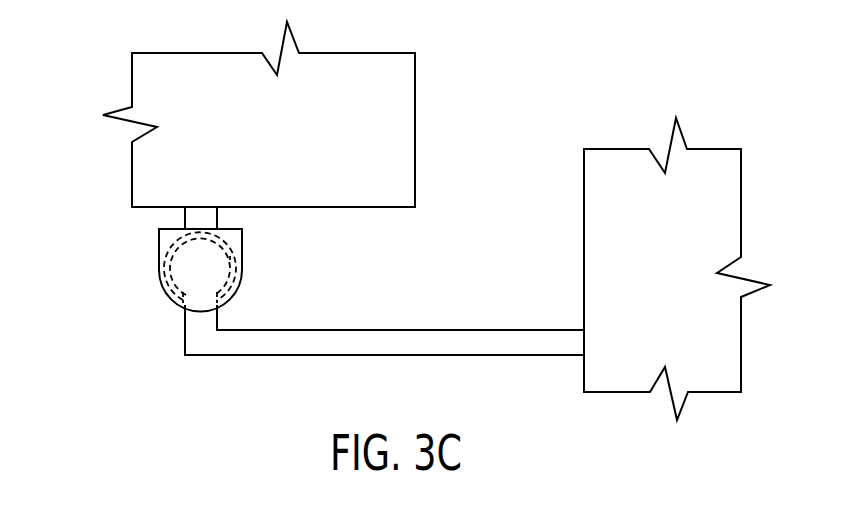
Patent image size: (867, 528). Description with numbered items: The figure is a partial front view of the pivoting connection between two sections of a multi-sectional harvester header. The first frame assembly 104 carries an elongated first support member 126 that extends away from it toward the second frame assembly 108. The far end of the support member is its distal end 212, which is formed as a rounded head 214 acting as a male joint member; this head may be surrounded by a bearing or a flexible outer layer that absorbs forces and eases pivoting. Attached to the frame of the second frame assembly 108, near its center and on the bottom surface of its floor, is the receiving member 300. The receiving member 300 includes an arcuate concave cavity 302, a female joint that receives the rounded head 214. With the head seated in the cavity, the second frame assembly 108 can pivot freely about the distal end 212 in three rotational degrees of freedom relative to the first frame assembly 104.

The first frame assembly 104 is at (627, 186).
The second frame assembly 108 is at (343, 122).
The first support member 126 is at (438, 330).
The distal end 212 is at (165, 297).
The rounded head 214 is at (232, 258).
The receiving member 300 is at (158, 306).
The concave cavity 302 is at (164, 258).